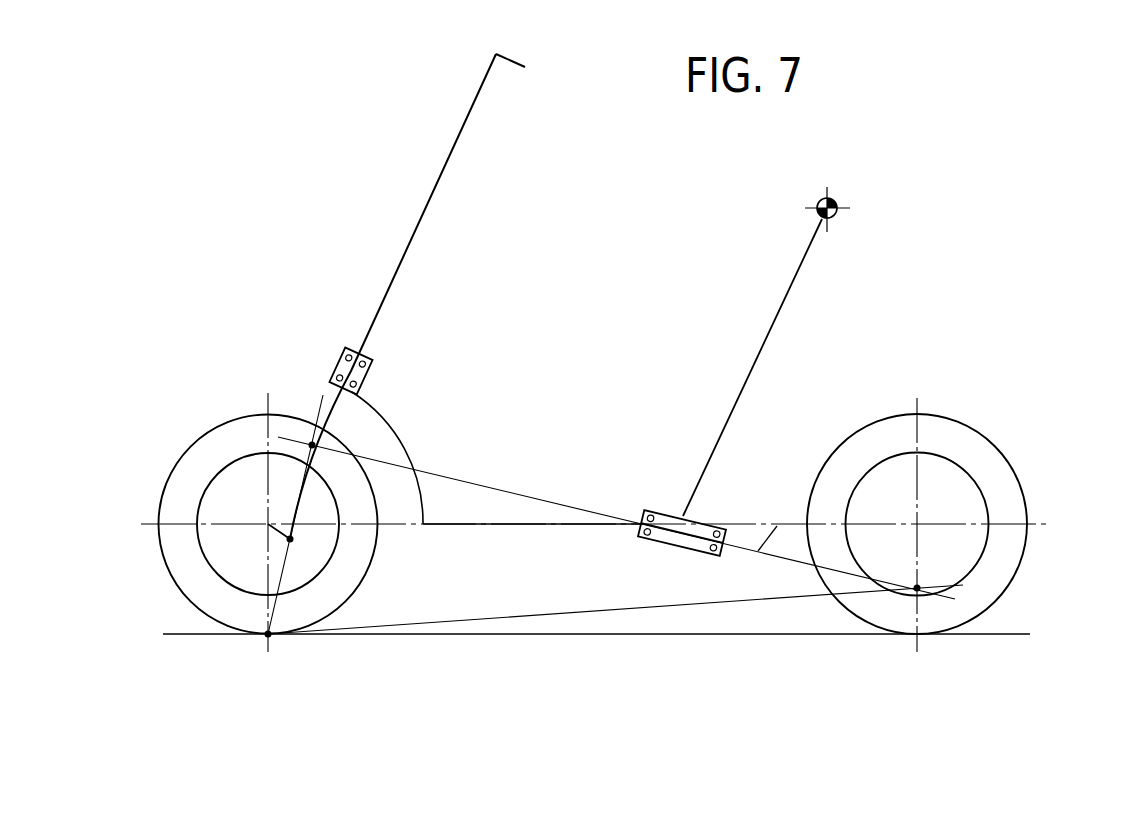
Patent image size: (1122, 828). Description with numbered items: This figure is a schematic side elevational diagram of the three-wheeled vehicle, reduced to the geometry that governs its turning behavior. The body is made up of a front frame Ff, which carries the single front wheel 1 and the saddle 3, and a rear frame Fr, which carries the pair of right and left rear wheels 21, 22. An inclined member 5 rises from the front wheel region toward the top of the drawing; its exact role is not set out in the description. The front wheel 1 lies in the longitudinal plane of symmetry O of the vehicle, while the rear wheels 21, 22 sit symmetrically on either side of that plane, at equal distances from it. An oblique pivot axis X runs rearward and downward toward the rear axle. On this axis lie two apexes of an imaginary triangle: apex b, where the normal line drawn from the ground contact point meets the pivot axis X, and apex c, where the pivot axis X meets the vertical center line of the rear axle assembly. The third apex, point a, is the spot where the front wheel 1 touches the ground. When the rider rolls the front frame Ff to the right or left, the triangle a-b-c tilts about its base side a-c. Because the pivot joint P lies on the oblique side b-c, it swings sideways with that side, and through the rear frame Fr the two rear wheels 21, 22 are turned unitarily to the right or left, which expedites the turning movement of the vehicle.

The front wheel 1 is at (183, 487).
The saddle 3 is at (817, 208).
The steering shaft / fork 5 is at (514, 62).
The rear wheel 21 is at (1019, 480).
The rear wheel 22 is at (950, 525).
The pivot joint P is at (672, 513).
The pivot axis X is at (540, 498).
The rear frame Fr is at (787, 524).
The front frame Ff is at (483, 525).
The point of ground contact a is at (271, 636).
The apex b is at (312, 444).
The apex c is at (919, 588).
The longitudinal plane of symmetry O is at (1036, 525).